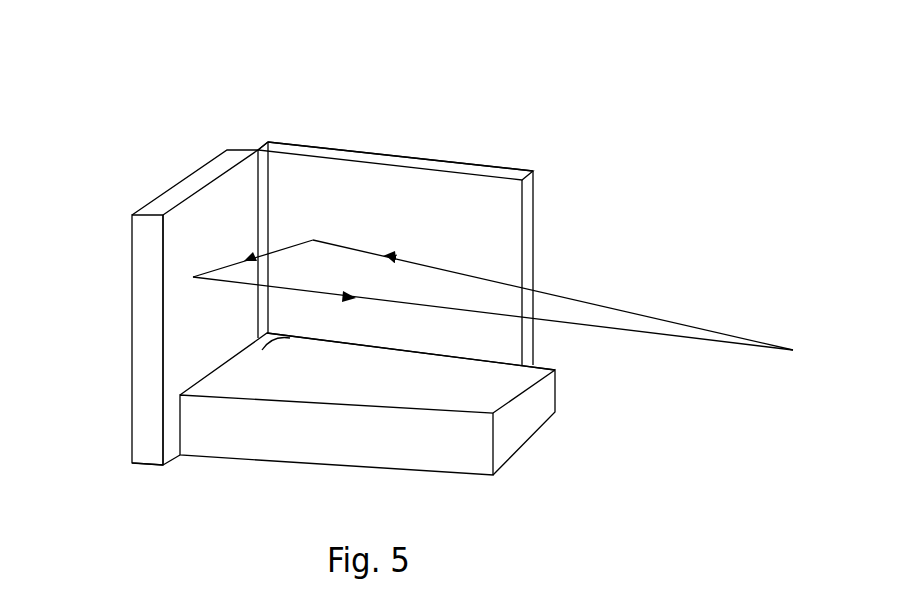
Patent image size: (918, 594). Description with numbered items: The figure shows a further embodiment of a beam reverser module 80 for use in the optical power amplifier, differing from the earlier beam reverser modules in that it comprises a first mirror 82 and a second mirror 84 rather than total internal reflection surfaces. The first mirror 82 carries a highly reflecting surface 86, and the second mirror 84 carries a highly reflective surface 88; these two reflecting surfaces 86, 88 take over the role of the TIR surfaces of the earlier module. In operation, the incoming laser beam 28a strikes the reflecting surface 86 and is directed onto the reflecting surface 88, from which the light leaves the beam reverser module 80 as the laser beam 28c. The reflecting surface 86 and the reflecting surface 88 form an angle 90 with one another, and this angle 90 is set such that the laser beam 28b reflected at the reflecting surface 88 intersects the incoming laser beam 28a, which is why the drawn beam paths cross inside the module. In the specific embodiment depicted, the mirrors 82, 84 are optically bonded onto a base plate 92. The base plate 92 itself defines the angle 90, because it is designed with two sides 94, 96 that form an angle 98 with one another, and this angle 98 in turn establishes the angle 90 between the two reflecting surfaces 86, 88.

The beam reverser module 80 is at (562, 137).
The first mirror 82 is at (398, 160).
The second mirror 84 is at (150, 252).
The reflecting surface 86 is at (438, 228).
The reflecting surface 88 is at (194, 324).
The angle 90 is at (242, 162).
The base plate 92 is at (323, 437).
The side 94 is at (208, 375).
The side 96 is at (377, 345).
The angle 98 is at (270, 340).
The incoming laser beam 28a is at (590, 302).
The laser beam 28b is at (227, 265).
The laser beam 28c is at (592, 327).